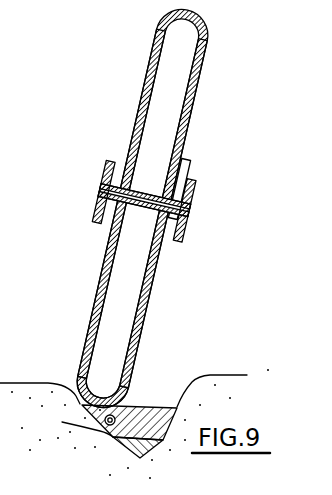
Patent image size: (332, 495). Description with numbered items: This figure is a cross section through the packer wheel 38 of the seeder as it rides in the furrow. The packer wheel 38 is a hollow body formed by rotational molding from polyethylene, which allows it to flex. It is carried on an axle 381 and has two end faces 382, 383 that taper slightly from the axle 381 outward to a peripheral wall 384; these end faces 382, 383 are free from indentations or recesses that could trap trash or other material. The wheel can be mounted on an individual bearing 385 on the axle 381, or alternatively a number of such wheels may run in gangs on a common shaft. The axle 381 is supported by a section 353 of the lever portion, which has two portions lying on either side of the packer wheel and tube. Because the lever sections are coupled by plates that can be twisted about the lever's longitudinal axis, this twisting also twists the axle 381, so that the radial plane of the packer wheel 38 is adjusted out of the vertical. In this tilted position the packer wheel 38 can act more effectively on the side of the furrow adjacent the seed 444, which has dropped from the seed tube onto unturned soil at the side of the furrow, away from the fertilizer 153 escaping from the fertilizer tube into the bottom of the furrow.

The packer wheel 38 is at (133, 208).
The axle 381 is at (181, 193).
The end face 382 is at (96, 283).
The end face 383 is at (153, 283).
The peripheral wall 384 is at (92, 393).
The bearing 385 is at (150, 186).
The section of lever portion 353 is at (101, 193).
The seed 444 is at (63, 422).
The fertilizer 153 is at (120, 452).